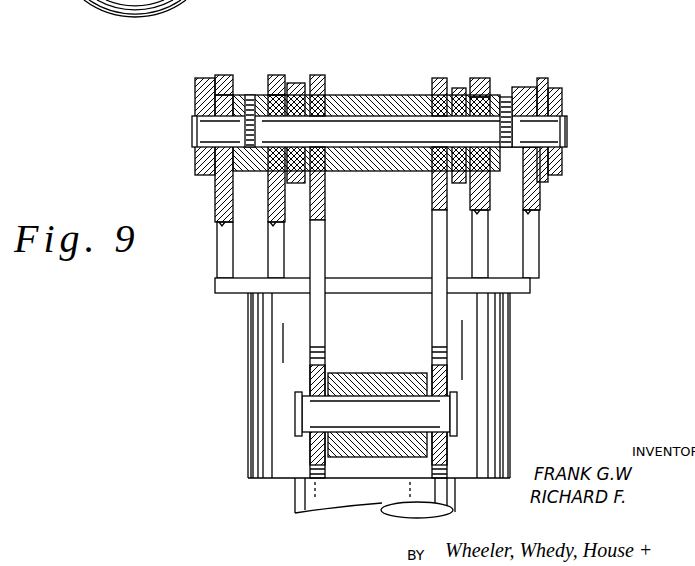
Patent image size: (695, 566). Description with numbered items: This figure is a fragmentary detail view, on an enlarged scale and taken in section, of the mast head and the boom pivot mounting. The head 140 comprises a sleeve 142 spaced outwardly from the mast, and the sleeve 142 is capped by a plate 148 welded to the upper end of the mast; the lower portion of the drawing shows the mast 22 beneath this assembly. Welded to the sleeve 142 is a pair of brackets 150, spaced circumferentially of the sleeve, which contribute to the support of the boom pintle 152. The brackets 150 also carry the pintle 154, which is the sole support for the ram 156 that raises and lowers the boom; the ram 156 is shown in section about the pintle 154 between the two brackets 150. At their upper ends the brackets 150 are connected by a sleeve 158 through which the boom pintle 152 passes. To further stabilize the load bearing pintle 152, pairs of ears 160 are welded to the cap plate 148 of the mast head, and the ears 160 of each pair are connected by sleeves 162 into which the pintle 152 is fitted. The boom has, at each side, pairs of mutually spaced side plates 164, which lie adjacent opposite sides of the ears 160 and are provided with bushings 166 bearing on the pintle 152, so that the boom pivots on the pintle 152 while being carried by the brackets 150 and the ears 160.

The pipe 22 is at (254, 500).
The head 140 is at (250, 392).
The sleeve 142 is at (263, 350).
The plate 148 is at (243, 286).
The brackets 150 is at (322, 75).
The boom pintle 152 is at (550, 130).
The pintle 154 is at (462, 417).
The ram 156 is at (376, 364).
The sleeve 158 is at (363, 96).
The ears 160 is at (230, 214).
The sleeves 162 is at (247, 93).
The side plates 164 is at (290, 76).
The bushings 166 is at (303, 80).